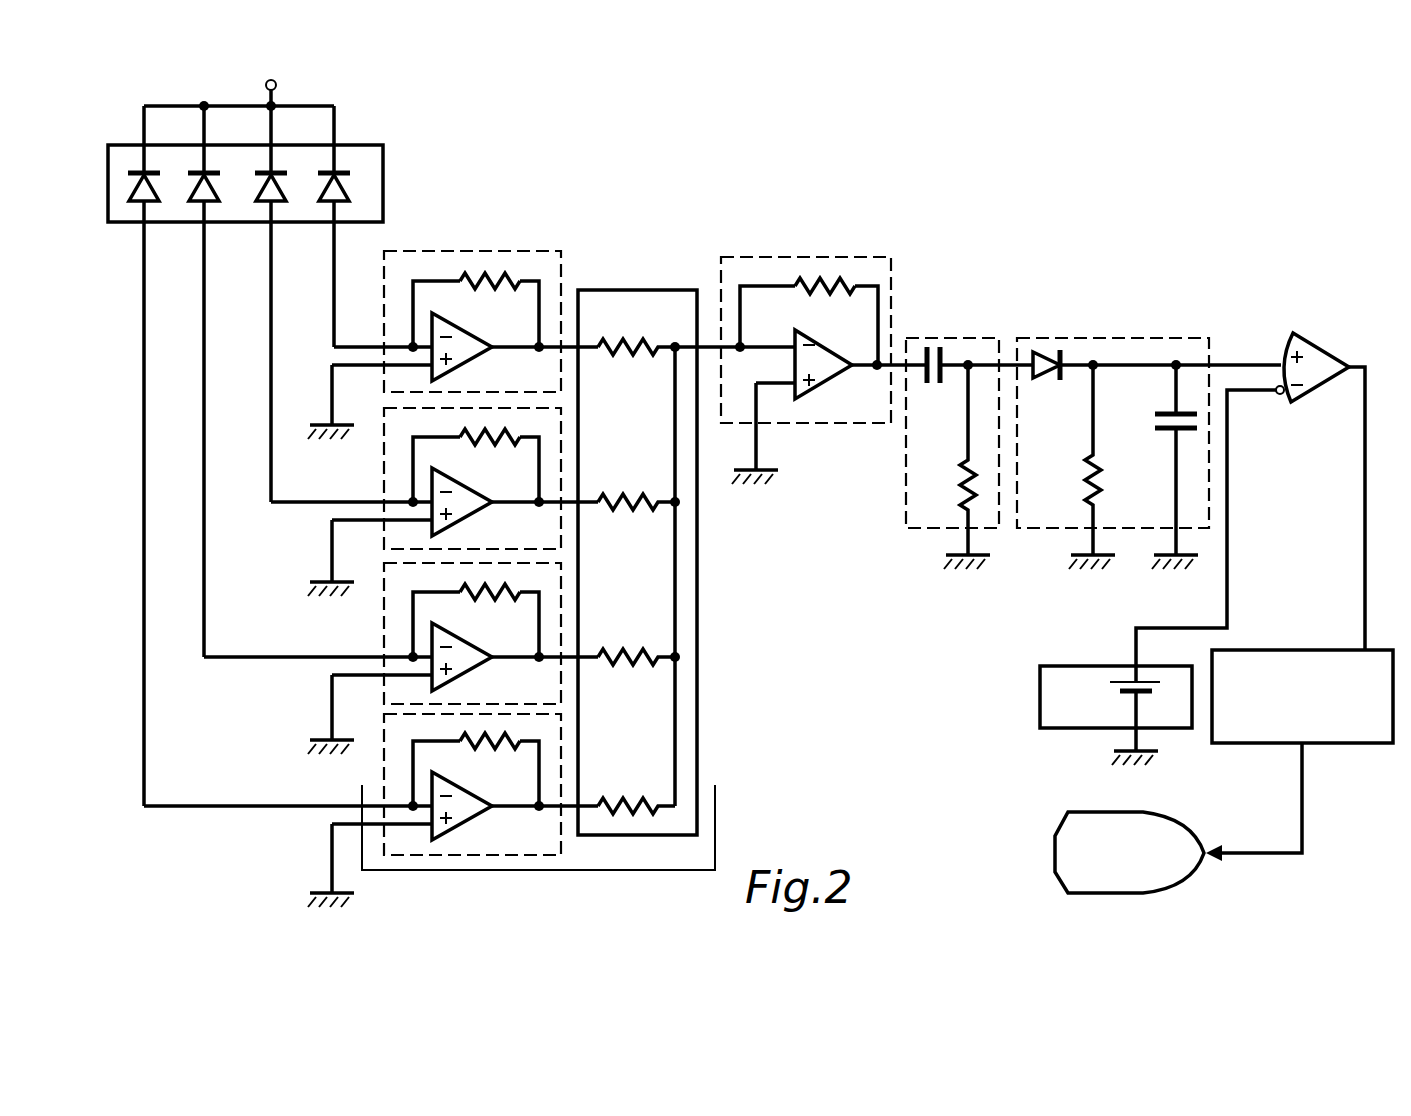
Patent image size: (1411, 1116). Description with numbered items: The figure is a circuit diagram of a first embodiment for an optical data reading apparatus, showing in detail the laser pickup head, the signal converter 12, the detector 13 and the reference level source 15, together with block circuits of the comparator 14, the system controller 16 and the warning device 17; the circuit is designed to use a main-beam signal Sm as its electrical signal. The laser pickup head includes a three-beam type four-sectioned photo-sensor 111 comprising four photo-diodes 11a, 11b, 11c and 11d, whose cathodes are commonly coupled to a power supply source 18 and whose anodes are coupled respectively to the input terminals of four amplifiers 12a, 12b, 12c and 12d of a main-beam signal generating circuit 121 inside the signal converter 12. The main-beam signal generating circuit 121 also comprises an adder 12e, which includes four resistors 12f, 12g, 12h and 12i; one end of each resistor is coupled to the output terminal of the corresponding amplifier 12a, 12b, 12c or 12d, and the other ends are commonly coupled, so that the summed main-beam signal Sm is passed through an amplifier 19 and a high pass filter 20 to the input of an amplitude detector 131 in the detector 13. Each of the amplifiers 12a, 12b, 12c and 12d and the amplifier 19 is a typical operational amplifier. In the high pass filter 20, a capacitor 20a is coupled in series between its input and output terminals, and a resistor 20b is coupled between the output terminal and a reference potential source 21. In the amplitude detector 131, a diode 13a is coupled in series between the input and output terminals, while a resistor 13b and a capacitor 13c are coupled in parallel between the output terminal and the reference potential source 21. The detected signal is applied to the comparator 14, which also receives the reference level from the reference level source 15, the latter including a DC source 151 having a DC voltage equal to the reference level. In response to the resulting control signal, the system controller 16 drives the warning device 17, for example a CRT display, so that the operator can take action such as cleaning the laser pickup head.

The power supply source 18 is at (278, 89).
The 3-beam type 4-sectioned photo-sensor 111 is at (384, 173).
The photo-diode 11a is at (327, 225).
The photo-diode 11b is at (264, 225).
The photo-diode 11c is at (197, 225).
The photo-diode 11d is at (138, 188).
The signal converter 12 is at (481, 235).
The amplifier 12a is at (510, 251).
The amplifier 12b is at (563, 432).
The amplifier 12c is at (563, 575).
The amplifier 12d is at (563, 735).
The adder 12e is at (713, 769).
The resistor 12f is at (640, 343).
The resistor 12g is at (641, 498).
The resistor 12h is at (641, 652).
The resistor 12i is at (631, 800).
The main-beam signal generating circuit 121 is at (505, 871).
The main-beam signal Sm is at (712, 340).
The amplifier 19 is at (794, 257).
The high pass filter 20 is at (958, 338).
The capacitor 20a is at (946, 386).
The resistor 20b is at (965, 490).
The detector 13 is at (1030, 320).
The amplitude detector 131 is at (1122, 338).
The diode 13a is at (1063, 371).
The resistor 13b is at (1100, 460).
The capacitor 13c is at (1165, 410).
The reference potential source 21 is at (946, 573).
The comparator 14 is at (1312, 346).
The reference level source 15 is at (1040, 706).
The DC source 151 is at (1110, 689).
The system controller 16 is at (1301, 650).
The warning device 17 is at (1055, 866).